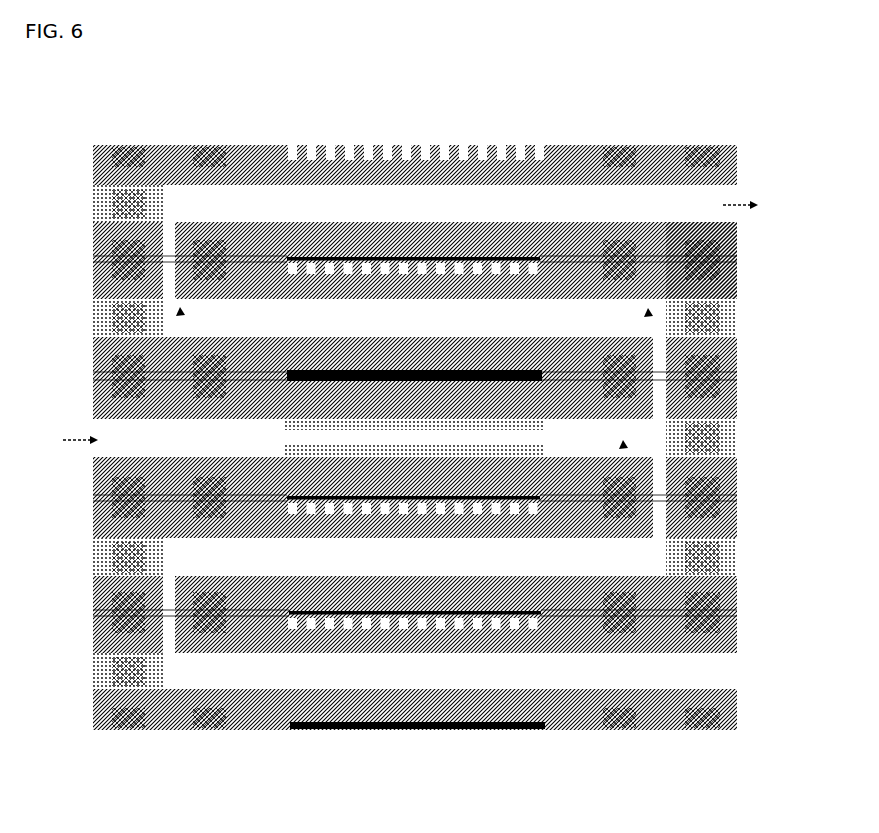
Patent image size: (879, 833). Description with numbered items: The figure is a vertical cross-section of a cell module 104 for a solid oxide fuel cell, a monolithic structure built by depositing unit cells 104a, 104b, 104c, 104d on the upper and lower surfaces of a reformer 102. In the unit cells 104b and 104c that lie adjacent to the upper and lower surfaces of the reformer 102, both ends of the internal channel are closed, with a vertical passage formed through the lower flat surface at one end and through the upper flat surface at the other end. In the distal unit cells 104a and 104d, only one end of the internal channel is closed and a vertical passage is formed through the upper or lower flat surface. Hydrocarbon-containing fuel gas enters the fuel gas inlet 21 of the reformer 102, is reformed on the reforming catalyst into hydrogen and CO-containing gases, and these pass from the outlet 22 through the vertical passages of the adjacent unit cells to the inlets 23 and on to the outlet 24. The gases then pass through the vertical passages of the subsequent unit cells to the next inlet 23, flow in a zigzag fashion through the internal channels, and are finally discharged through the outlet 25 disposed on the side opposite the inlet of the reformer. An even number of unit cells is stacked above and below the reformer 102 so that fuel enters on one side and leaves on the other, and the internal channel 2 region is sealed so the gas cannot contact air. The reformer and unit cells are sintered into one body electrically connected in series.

The electrode pattern 2 is at (368, 632).
The fuel gas inlet 21 is at (106, 450).
The vertical passage for discharging reformed gas 22 is at (582, 540).
The vertical passage for introducing hydrogen-containing gas 23 is at (185, 194).
The vertical passage for discharging hydrogen-containing gas 24 is at (92, 274).
The outlet for discharging final waste gas 25 is at (703, 193).
The reformer 102 is at (560, 438).
The cell module 104 is at (437, 456).
The distal unit cell stacked above a reformer 104a is at (465, 222).
The unit cell adjacent to the upper surface of a reformer 104b is at (469, 367).
The unit cell adjacent to the lower surface of a reformer 104c is at (471, 631).
The distal unit cell stacked below a reformer 104d is at (726, 668).